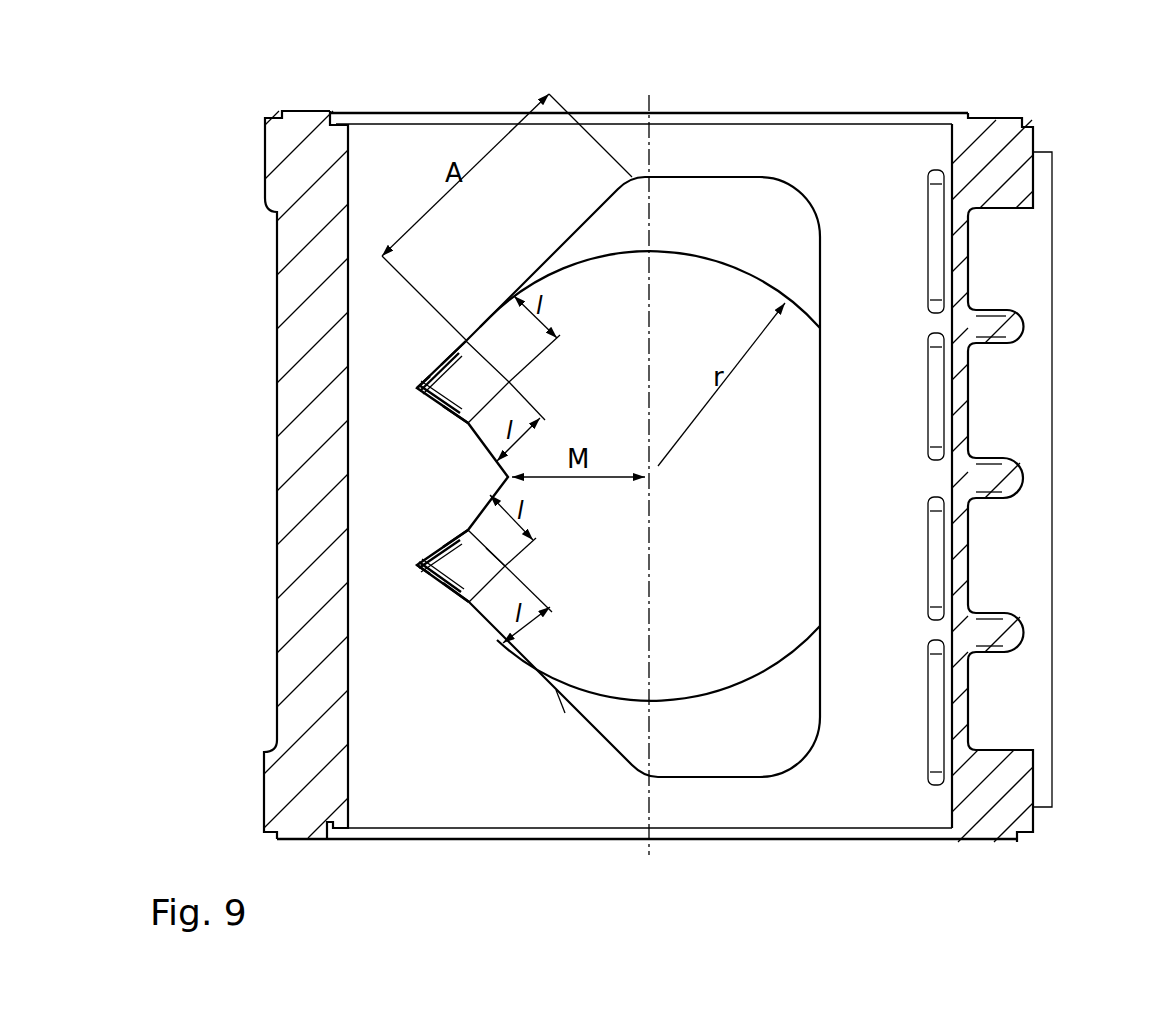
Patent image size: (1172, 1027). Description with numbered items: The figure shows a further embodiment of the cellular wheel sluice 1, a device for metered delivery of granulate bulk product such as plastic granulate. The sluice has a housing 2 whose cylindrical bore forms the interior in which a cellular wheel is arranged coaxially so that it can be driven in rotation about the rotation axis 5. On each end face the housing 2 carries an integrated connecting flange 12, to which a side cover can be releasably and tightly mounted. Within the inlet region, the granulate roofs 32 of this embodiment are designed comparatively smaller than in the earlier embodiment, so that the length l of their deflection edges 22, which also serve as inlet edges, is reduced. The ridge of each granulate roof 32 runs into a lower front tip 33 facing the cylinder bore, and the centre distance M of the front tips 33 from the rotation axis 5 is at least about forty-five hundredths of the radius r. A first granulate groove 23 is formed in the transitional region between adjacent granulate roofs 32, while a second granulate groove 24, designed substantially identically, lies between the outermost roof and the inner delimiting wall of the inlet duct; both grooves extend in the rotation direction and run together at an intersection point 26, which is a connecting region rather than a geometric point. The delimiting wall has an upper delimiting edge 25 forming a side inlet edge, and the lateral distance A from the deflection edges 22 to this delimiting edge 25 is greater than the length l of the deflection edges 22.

The cellular wheel sluice 1 is at (616, 100).
The housing 2 is at (1013, 196).
The rotation axis 5 is at (649, 802).
The connecting flange 12 is at (786, 112).
The deflection edge 22 is at (470, 335).
The first granulate groove 23 is at (443, 408).
The second granulate groove 24 is at (440, 352).
The delimiting edge 25 is at (490, 316).
The intersection point 26 is at (483, 384).
The granulate roof 32 is at (437, 373).
The front tip 33 is at (512, 566).